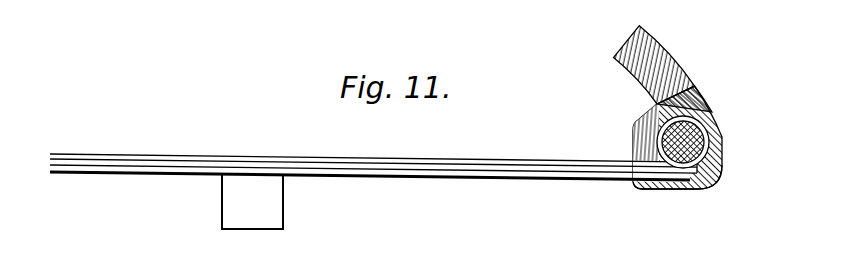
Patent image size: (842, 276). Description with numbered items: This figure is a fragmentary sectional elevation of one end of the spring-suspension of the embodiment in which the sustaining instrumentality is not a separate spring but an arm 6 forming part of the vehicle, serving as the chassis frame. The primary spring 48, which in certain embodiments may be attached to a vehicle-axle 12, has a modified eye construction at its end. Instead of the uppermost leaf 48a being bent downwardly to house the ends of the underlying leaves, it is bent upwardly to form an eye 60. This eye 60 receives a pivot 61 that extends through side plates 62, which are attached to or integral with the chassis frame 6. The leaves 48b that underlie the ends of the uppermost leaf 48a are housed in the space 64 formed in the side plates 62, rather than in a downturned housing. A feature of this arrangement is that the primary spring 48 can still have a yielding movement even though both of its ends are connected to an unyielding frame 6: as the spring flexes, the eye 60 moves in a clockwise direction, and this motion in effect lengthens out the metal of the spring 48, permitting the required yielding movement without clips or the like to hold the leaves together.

The arm 6 is at (657, 51).
The vehicle-axle 12 is at (252, 215).
The primary spring 48 is at (358, 170).
The uppermost leaf 48a is at (520, 160).
The underlying leaves 48b is at (578, 172).
The eye 60 is at (710, 120).
The pivot 61 is at (683, 142).
The side plates 62 is at (702, 95).
The space 64 is at (731, 168).